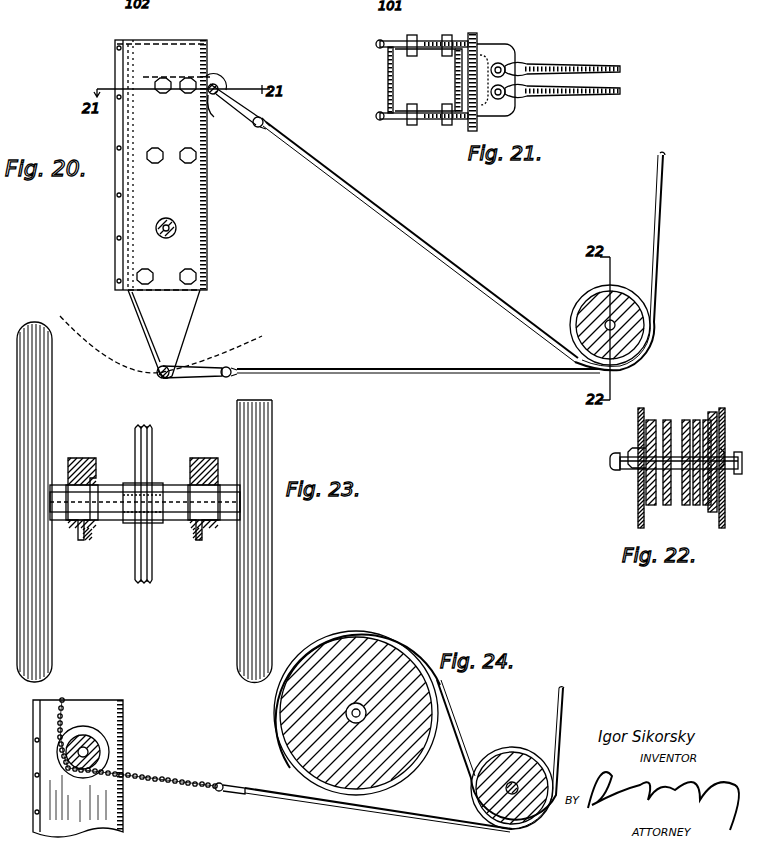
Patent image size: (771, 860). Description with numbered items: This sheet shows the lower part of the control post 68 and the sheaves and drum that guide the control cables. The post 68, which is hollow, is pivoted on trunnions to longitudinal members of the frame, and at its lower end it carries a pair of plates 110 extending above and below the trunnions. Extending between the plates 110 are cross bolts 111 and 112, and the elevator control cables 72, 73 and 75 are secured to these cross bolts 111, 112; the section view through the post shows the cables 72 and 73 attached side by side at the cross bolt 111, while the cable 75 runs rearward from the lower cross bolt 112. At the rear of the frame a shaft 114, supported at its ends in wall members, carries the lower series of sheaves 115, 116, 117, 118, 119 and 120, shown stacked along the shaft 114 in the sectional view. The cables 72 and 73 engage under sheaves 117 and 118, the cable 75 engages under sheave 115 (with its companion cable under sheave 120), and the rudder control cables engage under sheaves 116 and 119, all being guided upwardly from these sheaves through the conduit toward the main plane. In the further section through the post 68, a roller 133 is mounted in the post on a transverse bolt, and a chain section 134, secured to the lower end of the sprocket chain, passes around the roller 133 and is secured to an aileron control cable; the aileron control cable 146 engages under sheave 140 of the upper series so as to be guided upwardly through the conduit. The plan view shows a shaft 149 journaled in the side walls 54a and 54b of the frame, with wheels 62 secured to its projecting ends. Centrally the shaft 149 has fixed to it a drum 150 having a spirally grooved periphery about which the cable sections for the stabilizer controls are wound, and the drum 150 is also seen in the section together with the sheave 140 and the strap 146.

In FIG. 20, the post 68 is at (192, 58).
In FIG. 21, the post 68 is at (392, 120).
In FIG. 24, the post 68 is at (124, 728).
In FIG. 20, the cable 72 is at (402, 224).
In FIG. 21, the cable 72 is at (600, 66).
In FIG. 21, the cable 73 is at (604, 96).
In FIG. 20, the cable 75 is at (372, 367).
In FIG. 20, the wheels 62 is at (40, 316).
In FIG. 23, the wheels 62 is at (266, 432).
In FIG. 20, the plates 110 is at (190, 312).
In FIG. 21, the plates 110 is at (418, 40).
In FIG. 20, the cross bolt 111 is at (222, 82).
In FIG. 21, the cross bolt 111 is at (472, 36).
In FIG. 20, the cross bolt 112 is at (180, 366).
In FIG. 20, the shaft 114 is at (645, 292).
In FIG. 22, the shaft 114 is at (614, 468).
In FIG. 20, the sheave 115 is at (618, 290).
In FIG. 22, the sheave 115 is at (728, 424).
In FIG. 22, the sheave 116 is at (710, 422).
In FIG. 22, the sheave 117 is at (696, 420).
In FIG. 22, the sheave 118 is at (688, 420).
In FIG. 22, the sheave 119 is at (658, 422).
In FIG. 22, the sheave 120 is at (640, 422).
In FIG. 24, the roller 133 is at (86, 730).
In FIG. 24, the chain sections 134 is at (160, 780).
In FIG. 24, the sheave 140 is at (508, 752).
In FIG. 24, the control cable 146 is at (572, 714).
In FIG. 23, the shaft 149 is at (166, 490).
In FIG. 23, the drum 150 is at (150, 440).
In FIG. 24, the drum 150 is at (340, 655).
In FIG. 23, the side wall 54a is at (80, 460).
In FIG. 23, the side wall 54b is at (204, 460).